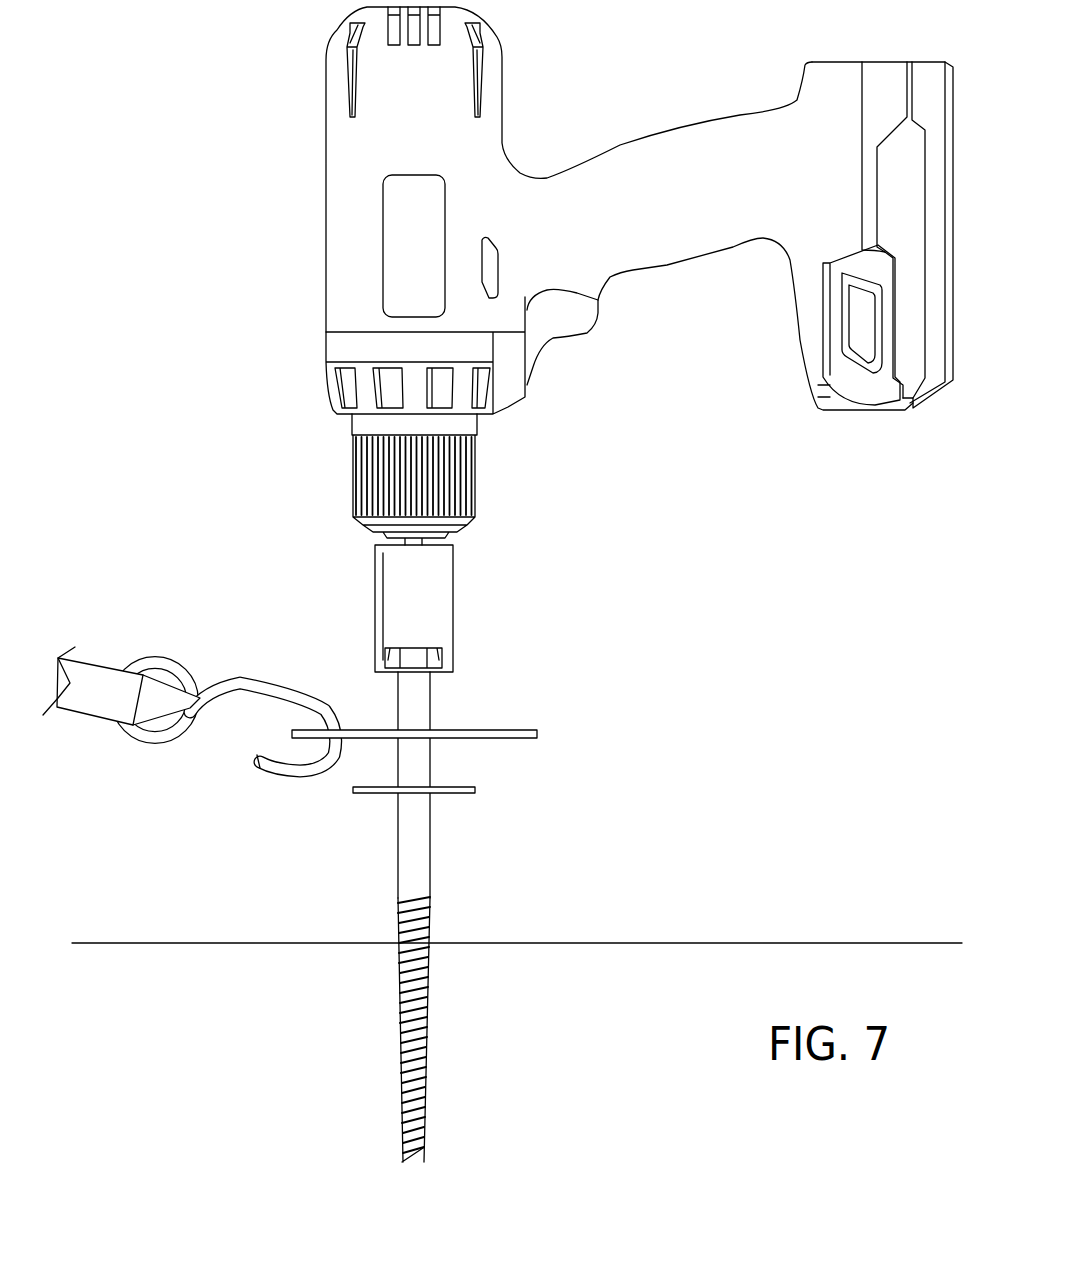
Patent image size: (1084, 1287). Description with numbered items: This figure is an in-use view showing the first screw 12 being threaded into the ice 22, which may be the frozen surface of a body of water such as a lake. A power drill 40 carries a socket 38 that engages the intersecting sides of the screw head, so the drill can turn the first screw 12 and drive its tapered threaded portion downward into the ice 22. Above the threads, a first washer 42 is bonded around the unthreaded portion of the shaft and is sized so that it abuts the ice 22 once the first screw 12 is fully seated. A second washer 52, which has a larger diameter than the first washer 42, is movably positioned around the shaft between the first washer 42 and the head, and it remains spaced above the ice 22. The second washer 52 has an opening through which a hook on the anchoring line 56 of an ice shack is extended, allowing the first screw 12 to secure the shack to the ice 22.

The first screw 12 is at (375, 876).
The ice 22 is at (688, 943).
The socket 38 is at (452, 607).
The power drill 40 is at (307, 293).
The first washer 42 is at (475, 787).
The second washer 52 is at (537, 732).
The anchoring line 56 is at (173, 677).